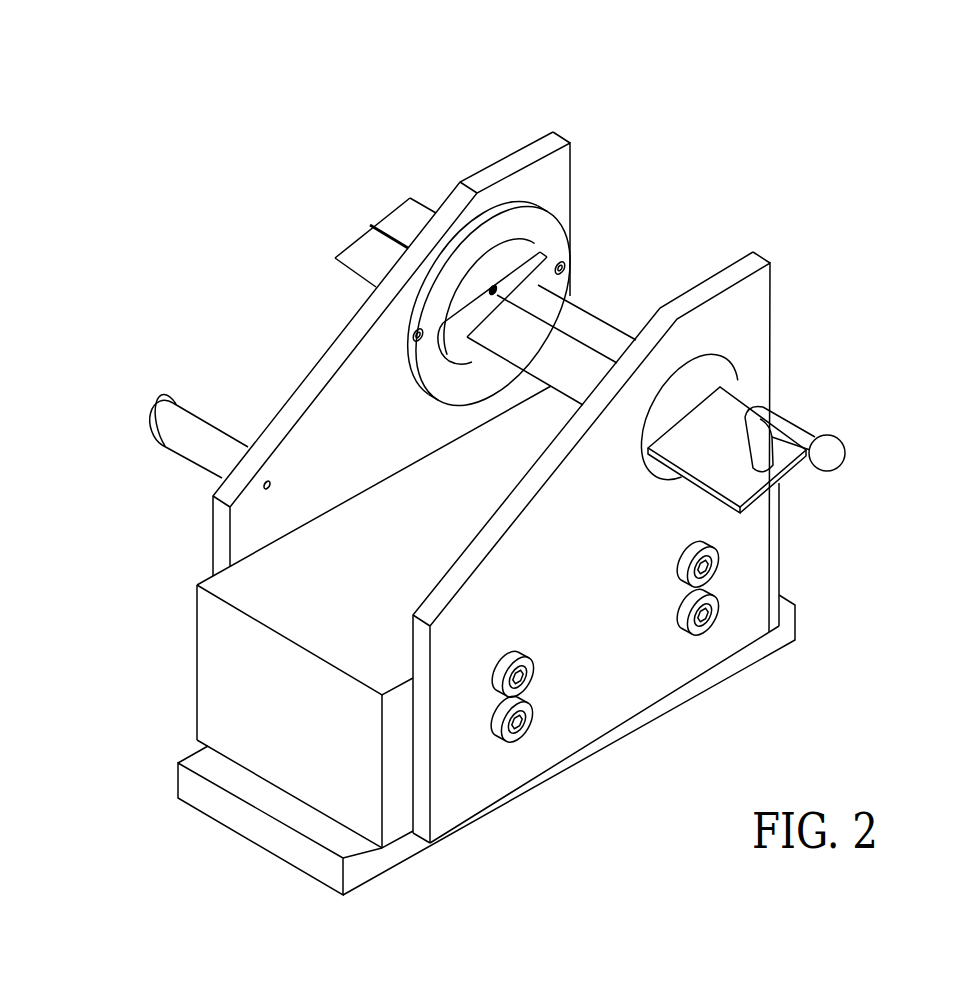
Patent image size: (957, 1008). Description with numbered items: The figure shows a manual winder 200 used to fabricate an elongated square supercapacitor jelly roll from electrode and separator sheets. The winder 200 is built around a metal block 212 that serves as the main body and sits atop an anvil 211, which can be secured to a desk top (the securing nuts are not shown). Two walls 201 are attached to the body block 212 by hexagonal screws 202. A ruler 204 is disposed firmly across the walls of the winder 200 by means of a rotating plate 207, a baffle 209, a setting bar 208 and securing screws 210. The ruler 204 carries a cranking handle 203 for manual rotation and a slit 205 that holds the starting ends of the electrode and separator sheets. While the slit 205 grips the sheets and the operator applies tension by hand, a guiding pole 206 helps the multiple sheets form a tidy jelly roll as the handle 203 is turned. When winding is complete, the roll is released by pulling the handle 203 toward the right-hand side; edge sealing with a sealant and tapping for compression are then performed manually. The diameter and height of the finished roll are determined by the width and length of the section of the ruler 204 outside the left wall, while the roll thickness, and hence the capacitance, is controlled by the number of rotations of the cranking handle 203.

The manual winder 200 is at (842, 85).
The wall 201 is at (357, 402).
The hexagonal screw 202 is at (524, 740).
The cranking handle 203 is at (788, 428).
The ruler 204 is at (603, 322).
The slit 205 is at (371, 223).
The guiding pole 206 is at (210, 448).
The rotating plate 207 is at (692, 383).
The setting bar 208 is at (541, 252).
The baffle 209 is at (527, 217).
The securing screw 210 is at (413, 334).
The anvil 211 is at (210, 796).
The metal block 212 is at (226, 689).